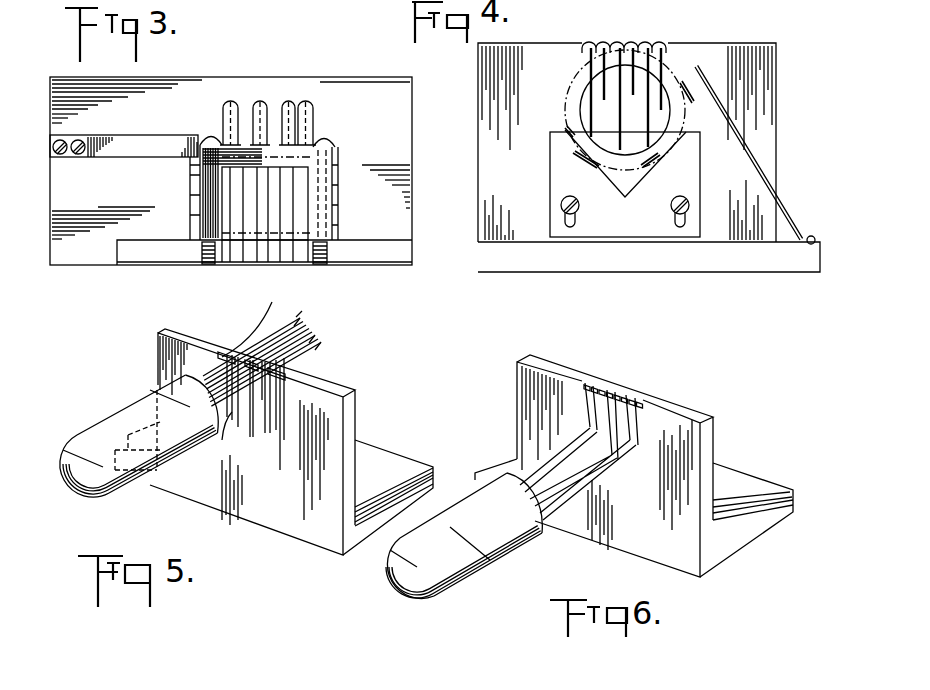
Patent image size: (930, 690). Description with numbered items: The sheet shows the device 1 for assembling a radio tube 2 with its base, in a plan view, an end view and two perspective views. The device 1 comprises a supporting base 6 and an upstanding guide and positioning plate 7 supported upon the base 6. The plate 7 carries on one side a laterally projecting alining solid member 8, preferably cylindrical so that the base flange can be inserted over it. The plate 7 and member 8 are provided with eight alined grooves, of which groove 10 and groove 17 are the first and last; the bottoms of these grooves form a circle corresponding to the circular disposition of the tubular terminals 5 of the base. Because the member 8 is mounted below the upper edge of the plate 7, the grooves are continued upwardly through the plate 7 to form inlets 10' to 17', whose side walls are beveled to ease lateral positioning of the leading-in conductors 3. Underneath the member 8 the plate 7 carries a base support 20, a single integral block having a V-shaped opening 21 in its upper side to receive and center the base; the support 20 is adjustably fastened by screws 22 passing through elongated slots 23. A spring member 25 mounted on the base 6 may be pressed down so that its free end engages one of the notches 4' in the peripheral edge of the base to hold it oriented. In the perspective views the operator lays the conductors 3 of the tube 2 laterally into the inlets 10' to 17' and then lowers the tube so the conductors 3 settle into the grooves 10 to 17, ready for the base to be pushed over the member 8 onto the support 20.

In FIG. 5, the device 1 is at (350, 396).
In FIG. 6, the device 1 is at (688, 400).
In FIG. 5, the radio tube 2 is at (90, 420).
In FIG. 6, the radio tube 2 is at (458, 585).
In FIG. 5, the leading-in conductors 3 is at (318, 333).
In FIG. 6, the leading-in conductors 3 is at (556, 452).
In FIG. 4, the notches 4' is at (624, 91).
In FIG. 3, the tubular terminals 5 is at (237, 102).
In FIG. 3, the supporting base 6 is at (328, 86).
In FIG. 4, the supporting base 6 is at (718, 262).
In FIG. 5, the supporting base 6 is at (403, 467).
In FIG. 6, the supporting base 6 is at (755, 483).
In FIG. 3, the guide and positioning plate 7 is at (398, 268).
In FIG. 4, the guide and positioning plate 7 is at (765, 72).
In FIG. 5, the guide and positioning plate 7 is at (352, 430).
In FIG. 6, the guide and positioning plate 7 is at (700, 445).
In FIG. 3, the alining solid member 8 is at (302, 200).
In FIG. 5, the groove 10 is at (223, 435).
In FIG. 3, the inlet 10' is at (215, 272).
In FIG. 5, the inlet 10' is at (235, 345).
In FIG. 5, the groove 17 is at (266, 396).
In FIG. 3, the inlet 17' is at (320, 269).
In FIG. 5, the inlet 17' is at (308, 369).
In FIG. 3, the base support 20 is at (340, 163).
In FIG. 4, the base support 20 is at (632, 230).
In FIG. 3, the opening 21 is at (302, 156).
In FIG. 4, the opening 21 is at (620, 200).
In FIG. 4, the screws 22 is at (562, 200).
In FIG. 4, the elongated slots 23 is at (676, 220).
In FIG. 3, the spring member 25 is at (132, 162).
In FIG. 4, the spring member 25 is at (745, 143).